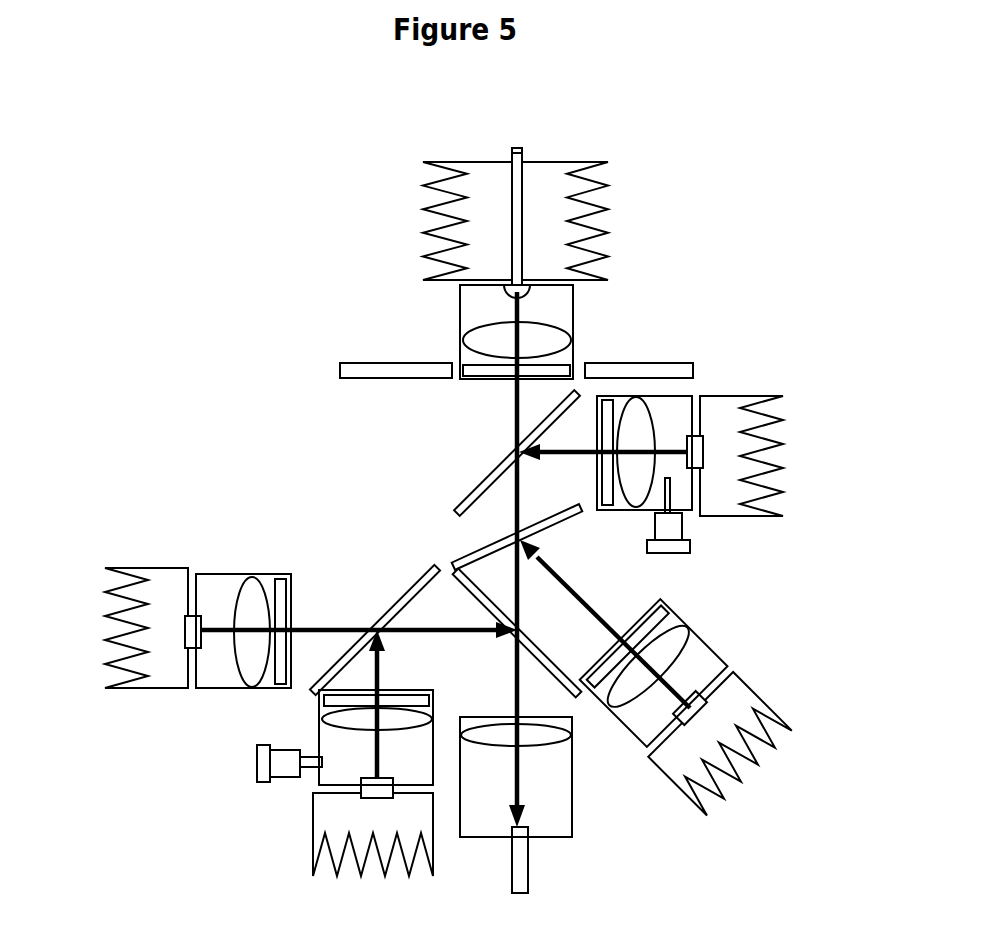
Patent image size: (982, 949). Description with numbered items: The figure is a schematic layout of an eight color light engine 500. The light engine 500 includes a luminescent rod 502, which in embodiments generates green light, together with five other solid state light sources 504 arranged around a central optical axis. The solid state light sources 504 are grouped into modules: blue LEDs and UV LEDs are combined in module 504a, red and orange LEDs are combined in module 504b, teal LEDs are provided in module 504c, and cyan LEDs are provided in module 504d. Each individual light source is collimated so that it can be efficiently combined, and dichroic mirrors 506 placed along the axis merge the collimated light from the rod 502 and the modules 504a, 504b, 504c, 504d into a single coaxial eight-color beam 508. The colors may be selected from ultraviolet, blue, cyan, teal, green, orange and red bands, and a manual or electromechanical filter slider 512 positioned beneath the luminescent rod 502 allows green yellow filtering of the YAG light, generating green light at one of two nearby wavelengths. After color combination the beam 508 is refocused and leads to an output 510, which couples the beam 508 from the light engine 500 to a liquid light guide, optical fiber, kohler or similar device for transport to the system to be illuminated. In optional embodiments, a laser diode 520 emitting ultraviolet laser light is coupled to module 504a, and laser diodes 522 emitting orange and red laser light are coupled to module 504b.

The eight color light engine 500 is at (196, 269).
The luminescent rod 502 is at (523, 152).
The solid state light sources 504 is at (421, 317).
The module 504a is at (360, 793).
The module 504b is at (695, 455).
The module 504c is at (688, 712).
The module 504d is at (193, 634).
The dichroic mirrors 506 is at (475, 490).
The coaxial 8-color beam 508 is at (520, 513).
The output 510 is at (547, 813).
The filter slider 512 is at (670, 363).
The laser diode 520 is at (265, 763).
The laser diodes 522 is at (667, 547).